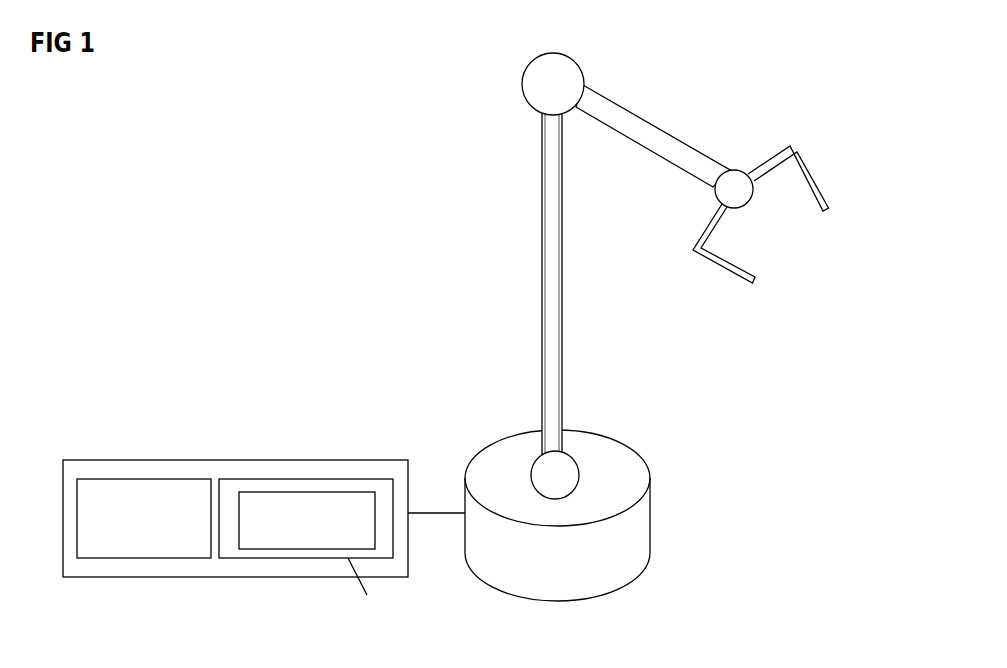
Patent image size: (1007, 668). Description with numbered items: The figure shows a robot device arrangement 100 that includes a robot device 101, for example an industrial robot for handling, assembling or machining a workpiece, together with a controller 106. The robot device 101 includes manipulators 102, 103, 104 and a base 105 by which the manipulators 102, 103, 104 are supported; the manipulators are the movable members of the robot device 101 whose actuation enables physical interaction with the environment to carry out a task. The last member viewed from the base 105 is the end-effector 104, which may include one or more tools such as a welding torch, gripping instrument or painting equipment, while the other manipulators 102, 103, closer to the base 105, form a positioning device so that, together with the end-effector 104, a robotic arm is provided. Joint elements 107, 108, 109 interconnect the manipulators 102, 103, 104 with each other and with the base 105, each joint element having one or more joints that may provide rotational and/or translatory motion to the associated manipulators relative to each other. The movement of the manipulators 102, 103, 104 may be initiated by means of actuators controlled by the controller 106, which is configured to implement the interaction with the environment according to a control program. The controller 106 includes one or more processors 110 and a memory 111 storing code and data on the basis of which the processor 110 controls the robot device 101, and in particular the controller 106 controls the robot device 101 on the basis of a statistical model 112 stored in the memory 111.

The robot device arrangement 100 is at (883, 62).
The robot device 101 is at (508, 173).
The manipulator 102 is at (552, 273).
The manipulator 103 is at (673, 148).
The end-effector 104 is at (813, 173).
The base 105 is at (643, 522).
The controller 106 is at (230, 460).
The joint element 107 is at (567, 473).
The joint element 108 is at (572, 77).
The joint element 109 is at (738, 202).
The processor 110 is at (150, 558).
The memory 111 is at (287, 558).
The statistical model 112 is at (323, 528).